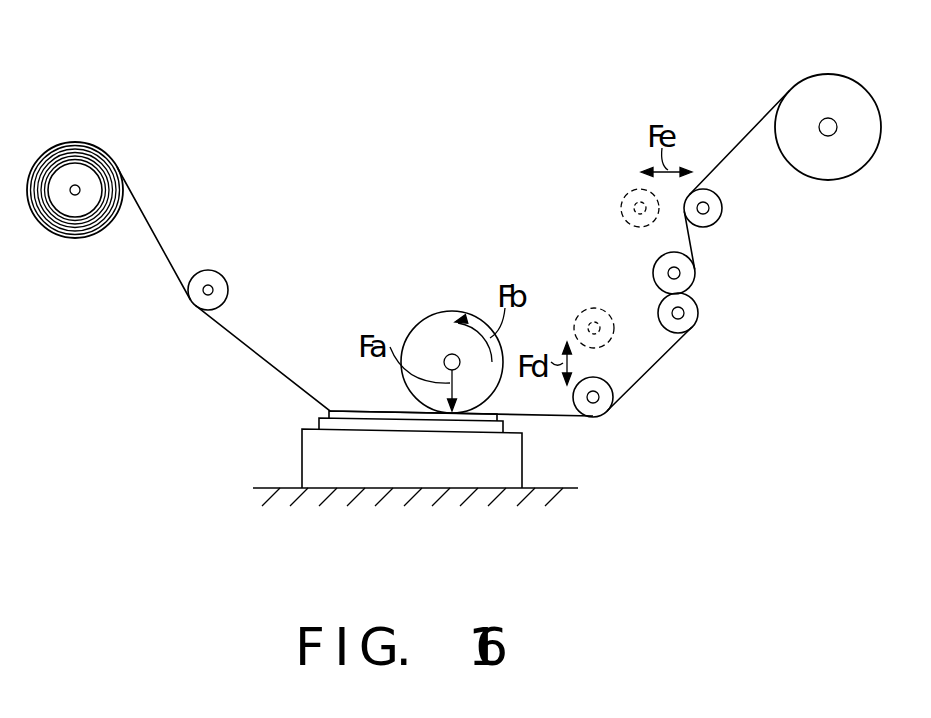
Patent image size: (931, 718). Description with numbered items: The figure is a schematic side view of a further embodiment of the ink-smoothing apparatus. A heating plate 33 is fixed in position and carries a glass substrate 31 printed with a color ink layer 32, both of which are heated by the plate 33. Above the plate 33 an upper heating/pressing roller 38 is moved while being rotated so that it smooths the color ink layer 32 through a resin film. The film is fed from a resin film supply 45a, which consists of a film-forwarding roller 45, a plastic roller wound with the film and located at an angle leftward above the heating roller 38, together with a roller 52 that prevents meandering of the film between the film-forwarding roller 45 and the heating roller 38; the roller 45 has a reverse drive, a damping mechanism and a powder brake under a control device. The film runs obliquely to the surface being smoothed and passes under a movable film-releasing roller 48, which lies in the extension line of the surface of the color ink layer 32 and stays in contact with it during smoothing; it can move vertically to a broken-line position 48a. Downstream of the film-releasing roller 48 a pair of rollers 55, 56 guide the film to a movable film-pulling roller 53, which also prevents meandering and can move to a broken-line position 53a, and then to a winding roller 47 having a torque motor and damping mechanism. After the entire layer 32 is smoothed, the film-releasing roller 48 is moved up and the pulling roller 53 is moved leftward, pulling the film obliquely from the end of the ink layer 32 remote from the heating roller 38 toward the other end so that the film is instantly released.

The film-forwarding roller 45 is at (70, 177).
The resin film supply 45a is at (113, 161).
The meandering preventing roller 52 is at (210, 270).
The heating/pressing roller 38 is at (437, 312).
The color ink layer 32 is at (329, 410).
The glass substrate 31 is at (490, 430).
The heating plate 33 is at (338, 475).
The film-releasing roller 48 is at (606, 409).
The position of film-releasing roller 48a is at (602, 314).
The roller 55 is at (690, 320).
The roller 56 is at (692, 272).
The film-pulling roller 53 is at (716, 212).
The position of film-pulling roller 53a is at (620, 207).
The winding roller 47 is at (832, 74).